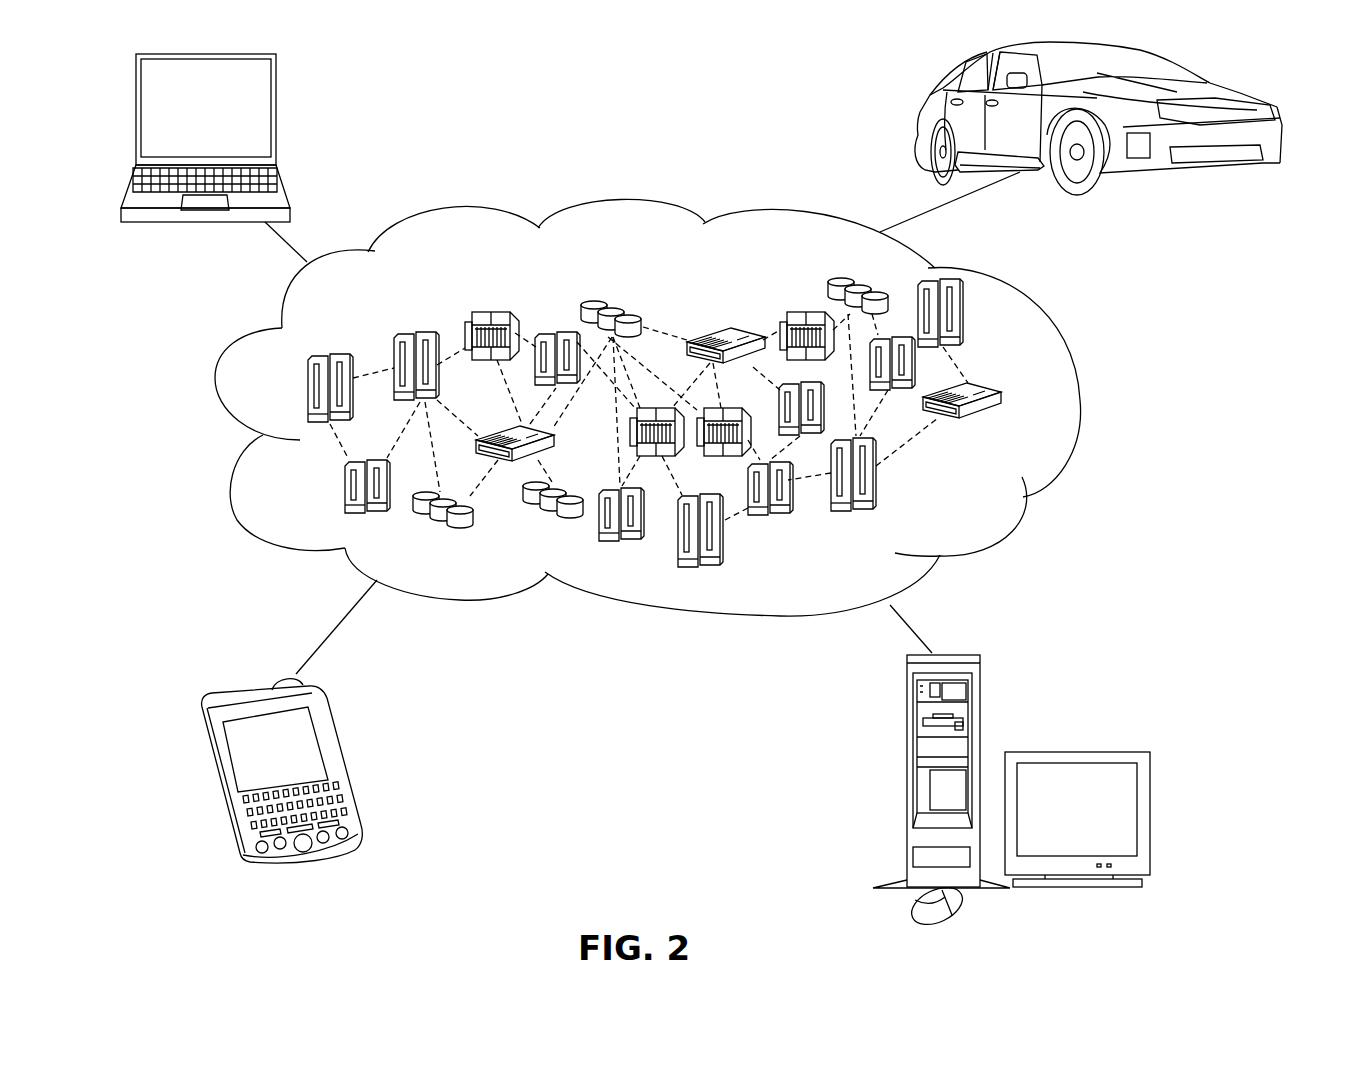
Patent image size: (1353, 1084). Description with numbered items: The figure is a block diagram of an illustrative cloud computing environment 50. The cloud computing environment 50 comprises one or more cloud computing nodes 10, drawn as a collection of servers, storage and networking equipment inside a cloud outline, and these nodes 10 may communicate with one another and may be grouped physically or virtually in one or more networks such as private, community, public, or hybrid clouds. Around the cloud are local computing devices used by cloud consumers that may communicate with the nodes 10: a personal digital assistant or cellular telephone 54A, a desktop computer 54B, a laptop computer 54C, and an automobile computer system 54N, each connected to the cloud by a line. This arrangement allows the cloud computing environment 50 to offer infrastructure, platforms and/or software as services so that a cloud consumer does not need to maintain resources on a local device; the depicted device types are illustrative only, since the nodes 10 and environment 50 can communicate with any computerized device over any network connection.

The cloud computing environment 50 is at (1074, 402).
The cloud computing node 10 is at (980, 503).
The personal digital assistant or cellular telephone 54A is at (330, 732).
The desktop computer 54B is at (906, 716).
The laptop computer 54C is at (277, 93).
The automobile computer system 54N is at (918, 108).